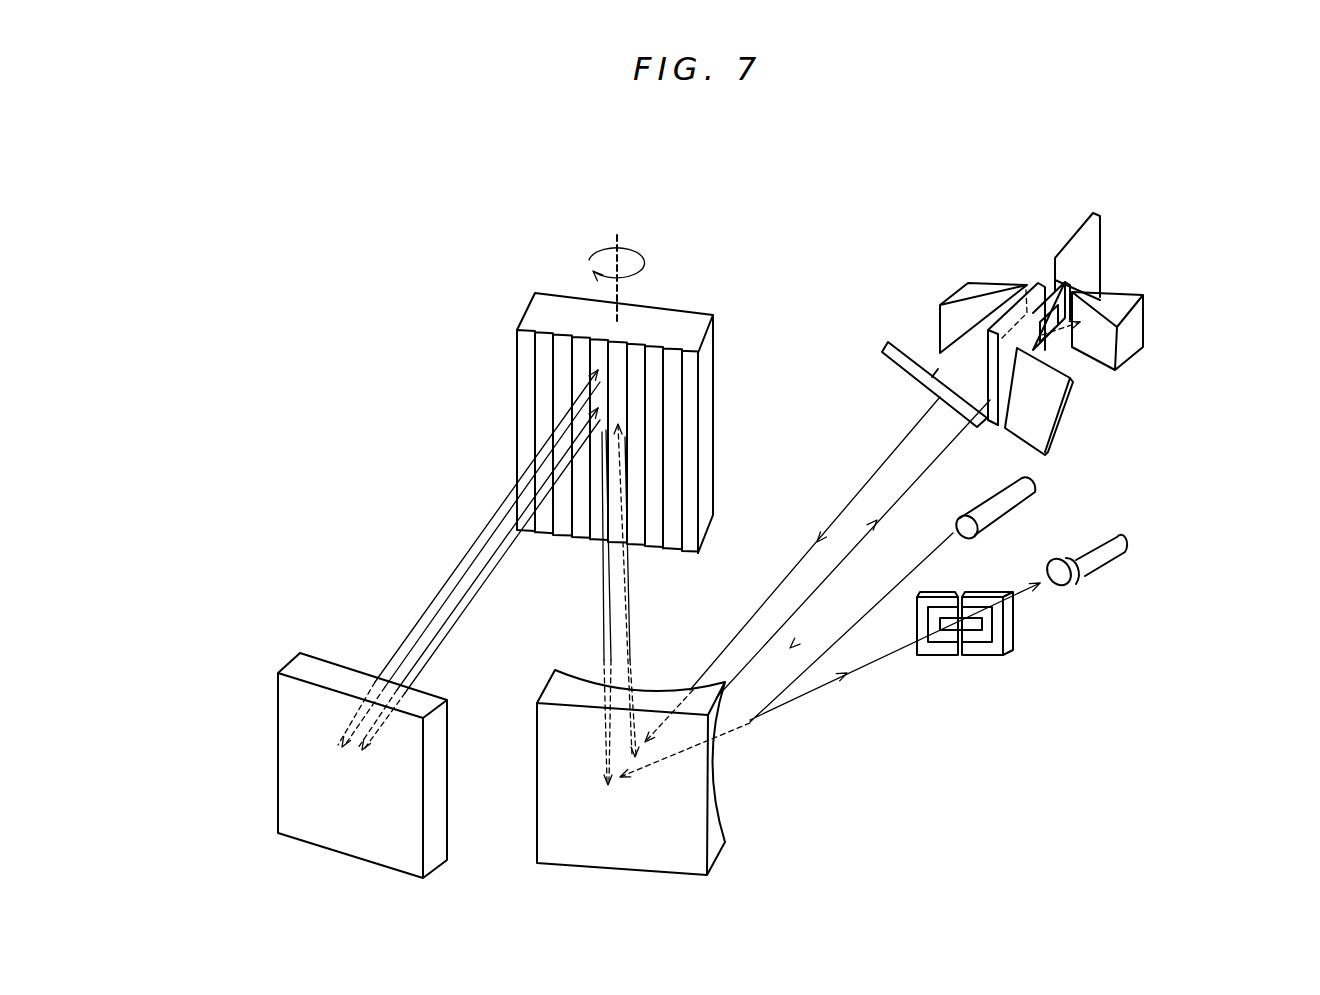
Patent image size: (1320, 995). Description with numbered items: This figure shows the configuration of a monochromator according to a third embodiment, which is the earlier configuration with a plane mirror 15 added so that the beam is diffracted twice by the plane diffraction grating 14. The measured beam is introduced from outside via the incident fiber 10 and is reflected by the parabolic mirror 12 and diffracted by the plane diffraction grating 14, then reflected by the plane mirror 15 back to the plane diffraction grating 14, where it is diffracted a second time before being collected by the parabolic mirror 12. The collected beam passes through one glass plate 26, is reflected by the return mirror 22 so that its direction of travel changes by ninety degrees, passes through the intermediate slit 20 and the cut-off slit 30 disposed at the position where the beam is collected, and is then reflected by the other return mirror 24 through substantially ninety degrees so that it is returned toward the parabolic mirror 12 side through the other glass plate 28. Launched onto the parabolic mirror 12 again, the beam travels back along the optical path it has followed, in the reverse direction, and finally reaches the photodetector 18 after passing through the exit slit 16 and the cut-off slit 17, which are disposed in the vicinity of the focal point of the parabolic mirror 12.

The incident fiber 10 is at (1037, 490).
The parabolic mirror 12 is at (715, 843).
The plane diffraction grating 14 is at (662, 320).
The plane mirror 15 is at (307, 673).
The exit slit 16 is at (1010, 638).
The cut-off slit 17 is at (978, 633).
The photodetector 18 is at (1113, 550).
The intermediate slit 20 is at (1105, 227).
The return mirror 22 is at (1128, 322).
The return mirror 24 is at (968, 287).
The glass plate 26 is at (1037, 413).
The glass plate 28 is at (885, 343).
The cut-off slit 30 is at (1063, 280).